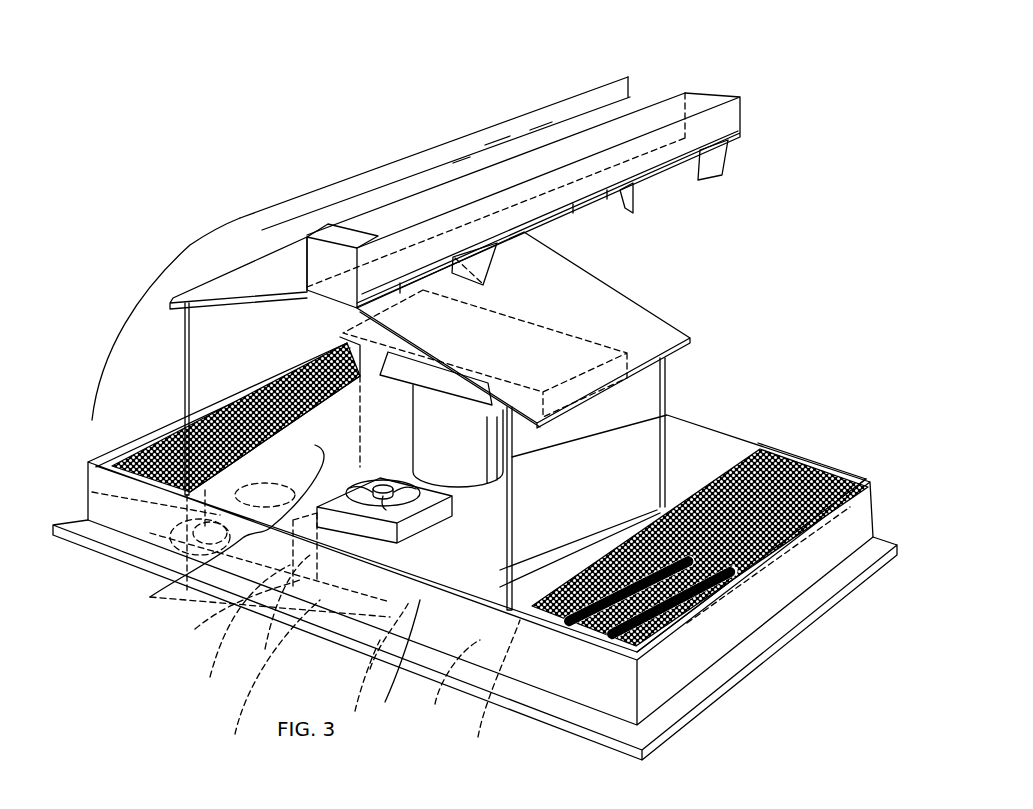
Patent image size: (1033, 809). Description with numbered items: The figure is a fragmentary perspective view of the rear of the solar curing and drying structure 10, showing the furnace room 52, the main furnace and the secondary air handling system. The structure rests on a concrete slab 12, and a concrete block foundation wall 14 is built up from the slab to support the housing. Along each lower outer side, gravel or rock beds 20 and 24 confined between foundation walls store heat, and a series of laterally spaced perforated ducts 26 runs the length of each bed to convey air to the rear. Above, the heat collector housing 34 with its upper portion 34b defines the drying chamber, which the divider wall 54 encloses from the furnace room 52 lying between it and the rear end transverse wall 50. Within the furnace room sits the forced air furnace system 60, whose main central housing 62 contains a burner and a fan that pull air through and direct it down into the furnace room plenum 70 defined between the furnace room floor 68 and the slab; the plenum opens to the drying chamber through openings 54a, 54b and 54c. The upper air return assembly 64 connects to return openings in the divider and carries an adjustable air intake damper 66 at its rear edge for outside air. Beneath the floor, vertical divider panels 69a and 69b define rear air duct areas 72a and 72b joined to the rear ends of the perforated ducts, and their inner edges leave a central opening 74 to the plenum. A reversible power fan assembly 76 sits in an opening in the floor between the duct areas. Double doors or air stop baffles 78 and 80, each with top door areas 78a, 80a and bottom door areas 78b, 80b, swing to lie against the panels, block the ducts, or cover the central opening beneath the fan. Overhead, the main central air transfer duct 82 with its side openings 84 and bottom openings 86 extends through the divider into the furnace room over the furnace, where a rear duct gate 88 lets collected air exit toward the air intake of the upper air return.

The solar curing and drying structure 10 is at (276, 185).
The concrete slab 12 is at (767, 633).
The concrete block foundation wall 14 is at (818, 562).
The gravel or rock bed 20 is at (800, 455).
The gravel or rock bed 24 is at (190, 419).
The perforated ducts 26 is at (150, 568).
The heat collector housing 34 is at (680, 360).
The upper portion of the collector housing 34b is at (617, 302).
The rear end transverse wall 50 is at (102, 376).
The furnace room 52 is at (135, 324).
The divider wall 54 is at (665, 388).
The opening 54a is at (540, 445).
The opening 54b is at (243, 358).
The opening 54c is at (670, 450).
The forced air furnace system 60 is at (663, 397).
The main central housing 62 is at (456, 425).
The upper air return assembly 64 is at (348, 340).
The adjustable air intake damper 66 is at (617, 299).
The furnace room floor 68 is at (640, 427).
The vertical divider panel 69a is at (232, 613).
The vertical divider panel 69b is at (490, 687).
The furnace room plenum 70 is at (767, 632).
The rear furnace room air duct area 72a is at (219, 527).
The rear furnace room air duct area 72b is at (396, 659).
The central opening 74 is at (395, 560).
The reversible power fan assembly 76 is at (385, 548).
The double door or air stop baffle 78 is at (230, 592).
The top door area 78a is at (270, 573).
The bottom door area 78b is at (260, 674).
The double door or air stop baffle 80 is at (351, 598).
The top door area 80a is at (457, 679).
The bottom door area 80b is at (357, 682).
The main central air transfer duct 82 is at (719, 81).
The side openings 84 is at (483, 152).
The bottom openings 86 is at (690, 187).
The rear duct gate 88 is at (530, 234).